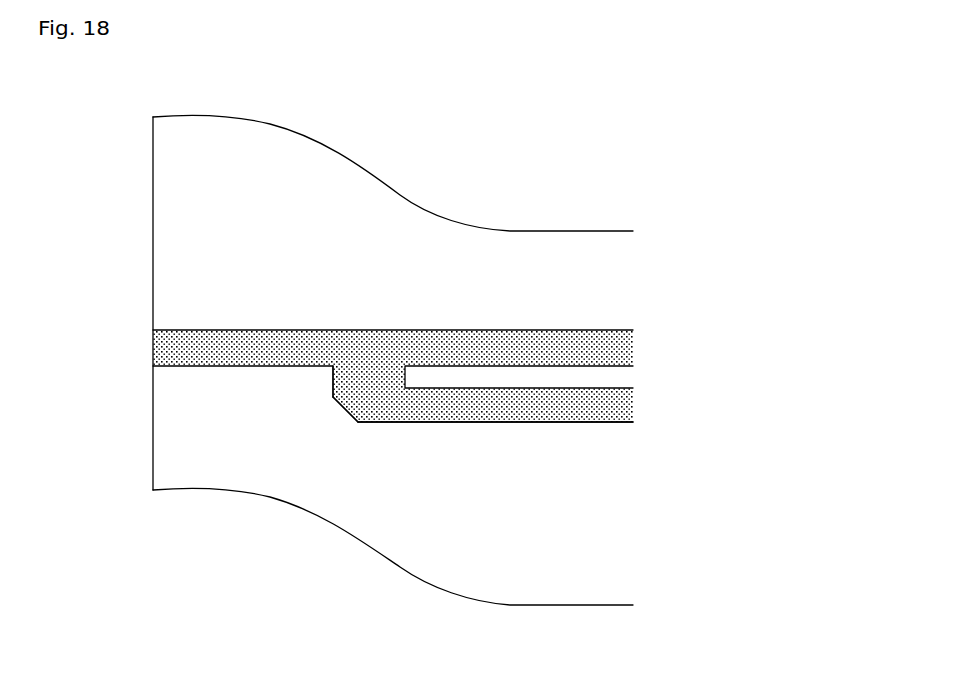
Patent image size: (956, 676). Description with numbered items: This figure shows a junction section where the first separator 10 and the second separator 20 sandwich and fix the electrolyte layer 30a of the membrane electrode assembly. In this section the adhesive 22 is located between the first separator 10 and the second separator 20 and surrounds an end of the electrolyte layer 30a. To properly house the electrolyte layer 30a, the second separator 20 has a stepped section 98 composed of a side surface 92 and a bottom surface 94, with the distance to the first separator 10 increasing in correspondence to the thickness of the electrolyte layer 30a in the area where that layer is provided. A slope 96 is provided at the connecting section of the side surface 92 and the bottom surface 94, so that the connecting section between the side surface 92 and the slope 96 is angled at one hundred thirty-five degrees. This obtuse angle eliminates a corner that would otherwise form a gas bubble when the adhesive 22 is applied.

The first separator 10 is at (212, 248).
The second separator 20 is at (187, 411).
The adhesive 22 is at (163, 353).
The electrolyte layer 30a is at (625, 376).
The side surface 92 is at (330, 375).
The bottom surface 94 is at (382, 423).
The slope 96 is at (342, 408).
The stepped section 98 is at (370, 383).